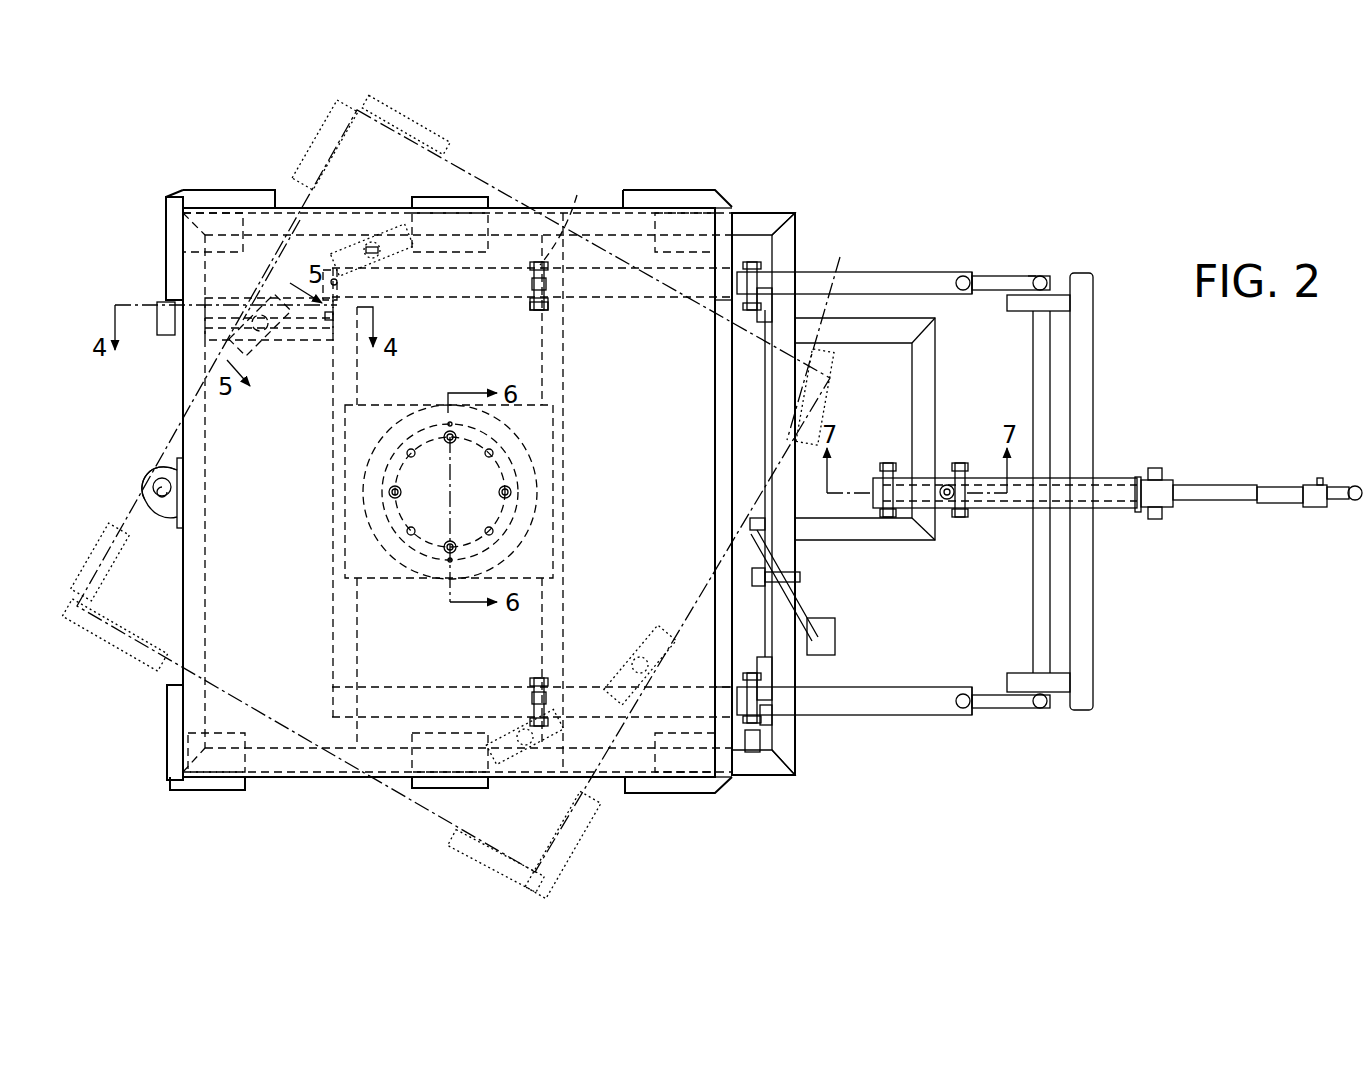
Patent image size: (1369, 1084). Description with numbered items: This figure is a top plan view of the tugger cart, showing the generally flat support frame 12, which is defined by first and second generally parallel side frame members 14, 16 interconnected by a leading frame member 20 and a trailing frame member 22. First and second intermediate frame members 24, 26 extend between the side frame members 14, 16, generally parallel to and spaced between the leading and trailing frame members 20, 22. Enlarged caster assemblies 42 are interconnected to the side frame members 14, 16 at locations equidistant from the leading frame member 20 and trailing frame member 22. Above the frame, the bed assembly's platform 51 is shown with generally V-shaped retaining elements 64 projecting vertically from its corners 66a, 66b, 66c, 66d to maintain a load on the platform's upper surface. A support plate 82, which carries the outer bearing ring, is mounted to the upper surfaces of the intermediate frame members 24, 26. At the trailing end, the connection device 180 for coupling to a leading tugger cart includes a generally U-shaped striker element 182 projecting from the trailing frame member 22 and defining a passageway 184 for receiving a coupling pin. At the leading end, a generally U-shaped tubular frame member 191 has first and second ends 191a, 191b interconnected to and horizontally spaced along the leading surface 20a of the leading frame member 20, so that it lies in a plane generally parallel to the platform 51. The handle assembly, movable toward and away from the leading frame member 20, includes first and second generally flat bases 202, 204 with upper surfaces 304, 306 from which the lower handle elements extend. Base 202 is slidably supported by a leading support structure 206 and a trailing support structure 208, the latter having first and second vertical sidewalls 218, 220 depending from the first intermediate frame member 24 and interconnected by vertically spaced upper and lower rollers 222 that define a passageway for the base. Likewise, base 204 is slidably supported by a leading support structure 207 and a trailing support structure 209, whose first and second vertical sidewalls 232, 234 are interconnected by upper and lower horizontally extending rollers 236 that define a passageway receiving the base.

The support frame 12 is at (768, 210).
The first side frame member 14 is at (778, 237).
The second side frame member 16 is at (765, 776).
The leading frame member 20 is at (795, 555).
The leading surface of leading frame member 20a is at (798, 742).
The trailing frame member 22 is at (187, 360).
The first intermediate frame member 24 is at (562, 612).
The second intermediate frame member 26 is at (333, 628).
The caster assemblies 42 is at (455, 198).
The platform 51 is at (487, 172).
The retaining elements 64 is at (413, 115).
The corner of platform 66a is at (827, 336).
The corner of platform 66b is at (532, 850).
The corner of platform 66c is at (112, 556).
The corner of platform 66d is at (350, 143).
The support plate 82 is at (565, 377).
The connection device 180 is at (1243, 520).
The U-shaped striker element 182 is at (140, 482).
The passageway 184 is at (168, 482).
The tubular frame member 191 is at (930, 400).
The first end of tubular frame member 191a is at (800, 318).
The second end of tubular frame member 191b is at (800, 545).
The first base 202 is at (903, 272).
The second base 204 is at (885, 688).
The leading support structure 206 is at (786, 722).
The leading support structure 207 is at (765, 262).
The trailing support structure 208 is at (556, 690).
The trailing support structure 209 is at (560, 305).
The first vertical sidewall 218 is at (545, 682).
The second vertical sidewall 220 is at (524, 765).
The upper and lower rollers 222 is at (535, 700).
The first vertical sidewall 232 is at (540, 312).
The second vertical sidewall 234 is at (568, 218).
The upper and lower rollers 236 is at (533, 283).
The upper surface of first base 304 is at (965, 268).
The upper surface of second base 306 is at (948, 717).